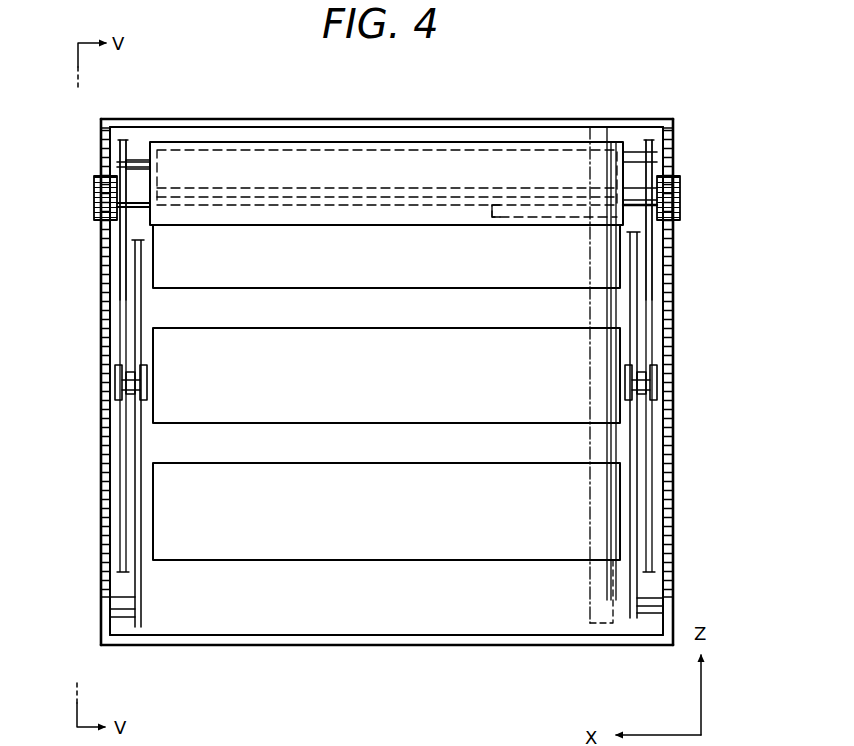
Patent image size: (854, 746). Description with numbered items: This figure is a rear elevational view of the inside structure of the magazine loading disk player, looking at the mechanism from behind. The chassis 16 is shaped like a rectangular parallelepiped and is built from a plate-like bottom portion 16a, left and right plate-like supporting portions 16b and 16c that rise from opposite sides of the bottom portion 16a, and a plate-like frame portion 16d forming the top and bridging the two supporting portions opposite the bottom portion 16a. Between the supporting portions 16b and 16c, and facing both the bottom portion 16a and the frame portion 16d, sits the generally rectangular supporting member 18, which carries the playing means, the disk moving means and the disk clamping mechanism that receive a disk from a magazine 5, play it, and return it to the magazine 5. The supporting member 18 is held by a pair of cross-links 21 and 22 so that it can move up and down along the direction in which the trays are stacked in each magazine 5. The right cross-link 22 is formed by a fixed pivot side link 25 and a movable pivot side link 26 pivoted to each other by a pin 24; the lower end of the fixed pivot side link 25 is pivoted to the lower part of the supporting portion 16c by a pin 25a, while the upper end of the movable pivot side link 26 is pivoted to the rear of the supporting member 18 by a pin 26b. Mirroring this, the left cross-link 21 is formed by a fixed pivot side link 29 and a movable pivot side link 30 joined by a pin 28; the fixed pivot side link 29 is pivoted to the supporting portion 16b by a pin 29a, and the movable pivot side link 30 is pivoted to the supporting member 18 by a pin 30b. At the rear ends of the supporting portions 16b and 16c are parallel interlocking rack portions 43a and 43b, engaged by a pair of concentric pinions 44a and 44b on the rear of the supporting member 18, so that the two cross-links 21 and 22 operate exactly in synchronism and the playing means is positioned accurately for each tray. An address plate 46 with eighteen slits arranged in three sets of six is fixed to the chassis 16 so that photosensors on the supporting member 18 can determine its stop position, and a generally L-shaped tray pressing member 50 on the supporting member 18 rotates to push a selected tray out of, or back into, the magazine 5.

The magazine 5 is at (259, 273).
The chassis 16 is at (359, 381).
The bottom portion 16a is at (474, 640).
The supporting portion 16b is at (100, 641).
The supporting portion 16c is at (666, 645).
The frame portion 16d is at (513, 121).
The supporting member 18 is at (386, 182).
The cross-link 21 is at (114, 343).
The cross-link 22 is at (660, 333).
The pin 24 is at (652, 380).
The fixed pivot side link 25 is at (687, 425).
The pin 25a is at (650, 612).
The movable pivot side link 26 is at (682, 219).
The pin 26b is at (653, 163).
The pin 28 is at (114, 385).
The fixed pivot side link 29 is at (87, 433).
The pin 29a is at (109, 608).
The movable pivot side link 30 is at (95, 221).
The pin 30b is at (132, 164).
The interlocking rack portion 43a is at (104, 538).
The interlocking rack portion 43b is at (673, 531).
The pinion 44a is at (94, 205).
The pinion 44b is at (680, 193).
The address plate 46 is at (589, 604).
The tray pressing member 50 is at (528, 214).